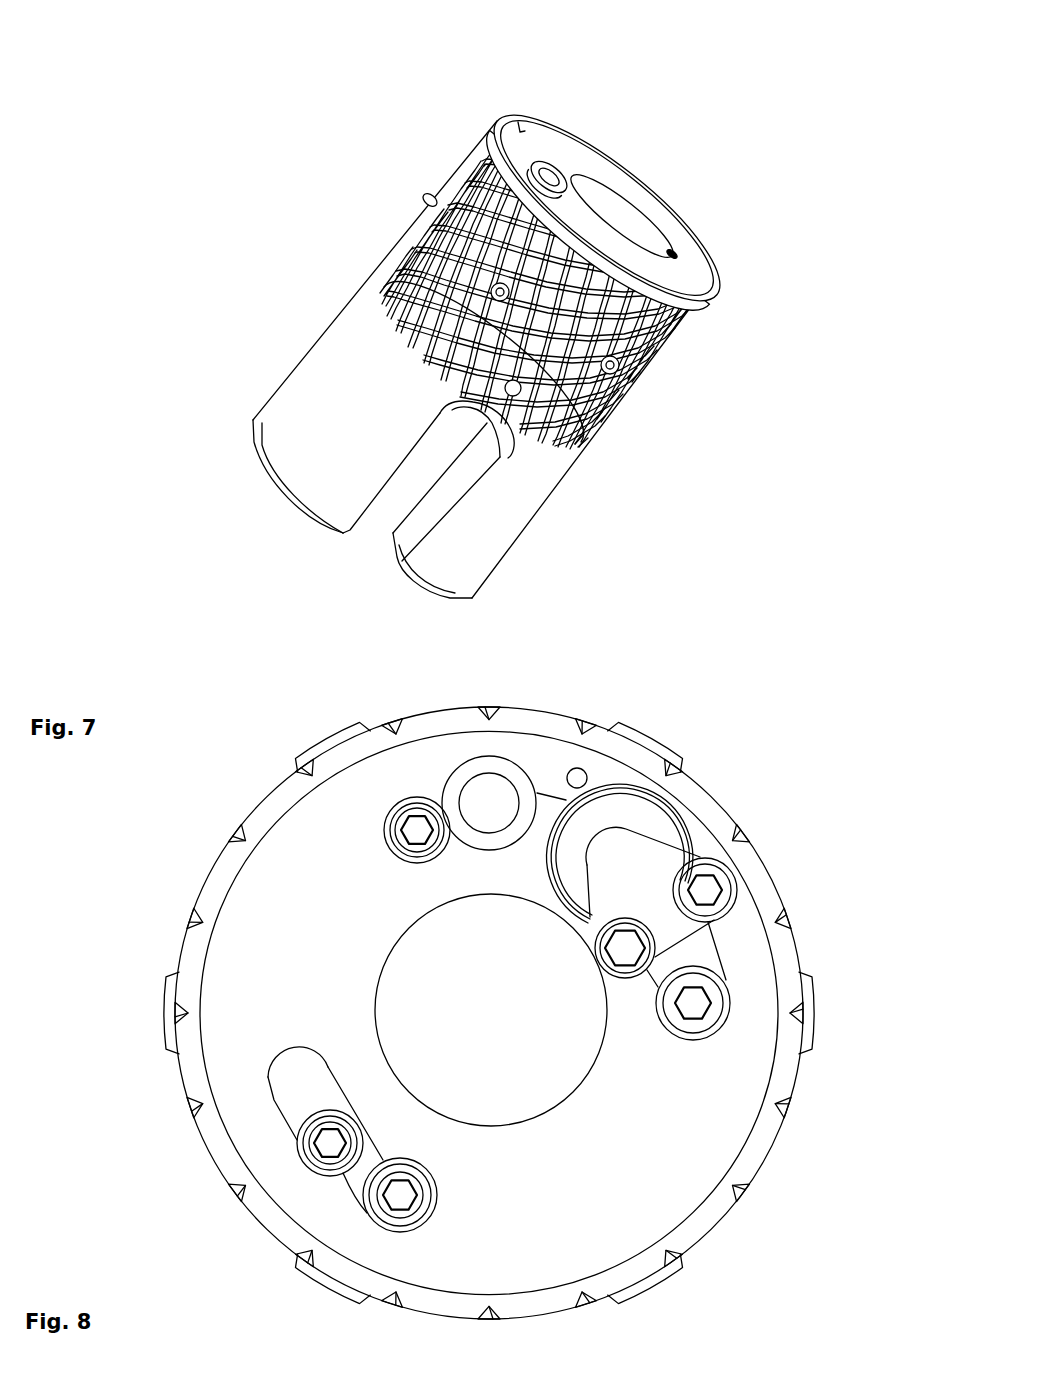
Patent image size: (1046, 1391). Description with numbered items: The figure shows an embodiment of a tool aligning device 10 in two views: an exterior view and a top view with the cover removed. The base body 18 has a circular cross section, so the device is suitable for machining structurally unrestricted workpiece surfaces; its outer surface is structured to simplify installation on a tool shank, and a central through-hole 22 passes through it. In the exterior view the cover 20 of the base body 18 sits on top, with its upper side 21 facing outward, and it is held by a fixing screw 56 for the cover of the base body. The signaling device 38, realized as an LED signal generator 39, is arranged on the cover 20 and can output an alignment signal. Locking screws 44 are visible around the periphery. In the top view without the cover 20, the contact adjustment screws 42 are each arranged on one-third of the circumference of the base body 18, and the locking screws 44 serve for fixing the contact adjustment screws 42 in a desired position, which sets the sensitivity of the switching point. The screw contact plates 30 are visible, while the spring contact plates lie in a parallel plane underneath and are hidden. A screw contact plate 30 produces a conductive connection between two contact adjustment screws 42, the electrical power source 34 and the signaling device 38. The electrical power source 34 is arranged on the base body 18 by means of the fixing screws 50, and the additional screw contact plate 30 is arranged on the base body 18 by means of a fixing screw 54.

In FIG. 7, the tool aligning device 10 is at (775, 148).
In FIG. 8, the tool aligning device 10 is at (833, 800).
In FIG. 7, the base body 18 is at (353, 318).
In FIG. 8, the base body 18 is at (275, 808).
In FIG. 7, the cover of base body 20 is at (688, 280).
In FIG. 7, the upper side of cover 21 is at (518, 119).
In FIG. 8, the through-hole 22 is at (475, 1021).
In FIG. 8, the screw contact plate 30 is at (700, 955).
In FIG. 8, the electrical power source 34 is at (643, 823).
In FIG. 7, the signaling device 38 is at (575, 143).
In FIG. 8, the signaling device 38 is at (514, 758).
In FIG. 7, the LED signal generator 39 is at (551, 168).
In FIG. 8, the LED signal generator 39 is at (488, 790).
In FIG. 8, the contact adjustment screw 42 is at (417, 833).
In FIG. 7, the locking screw 44 is at (430, 200).
In FIG. 8, the locking screw 44 is at (343, 738).
In FIG. 8, the fixing screw for battery 50 is at (697, 887).
In FIG. 8, the fixing screw for second contact plate 54 is at (330, 1143).
In FIG. 7, the fixing screw for cover of base body 56 is at (678, 247).